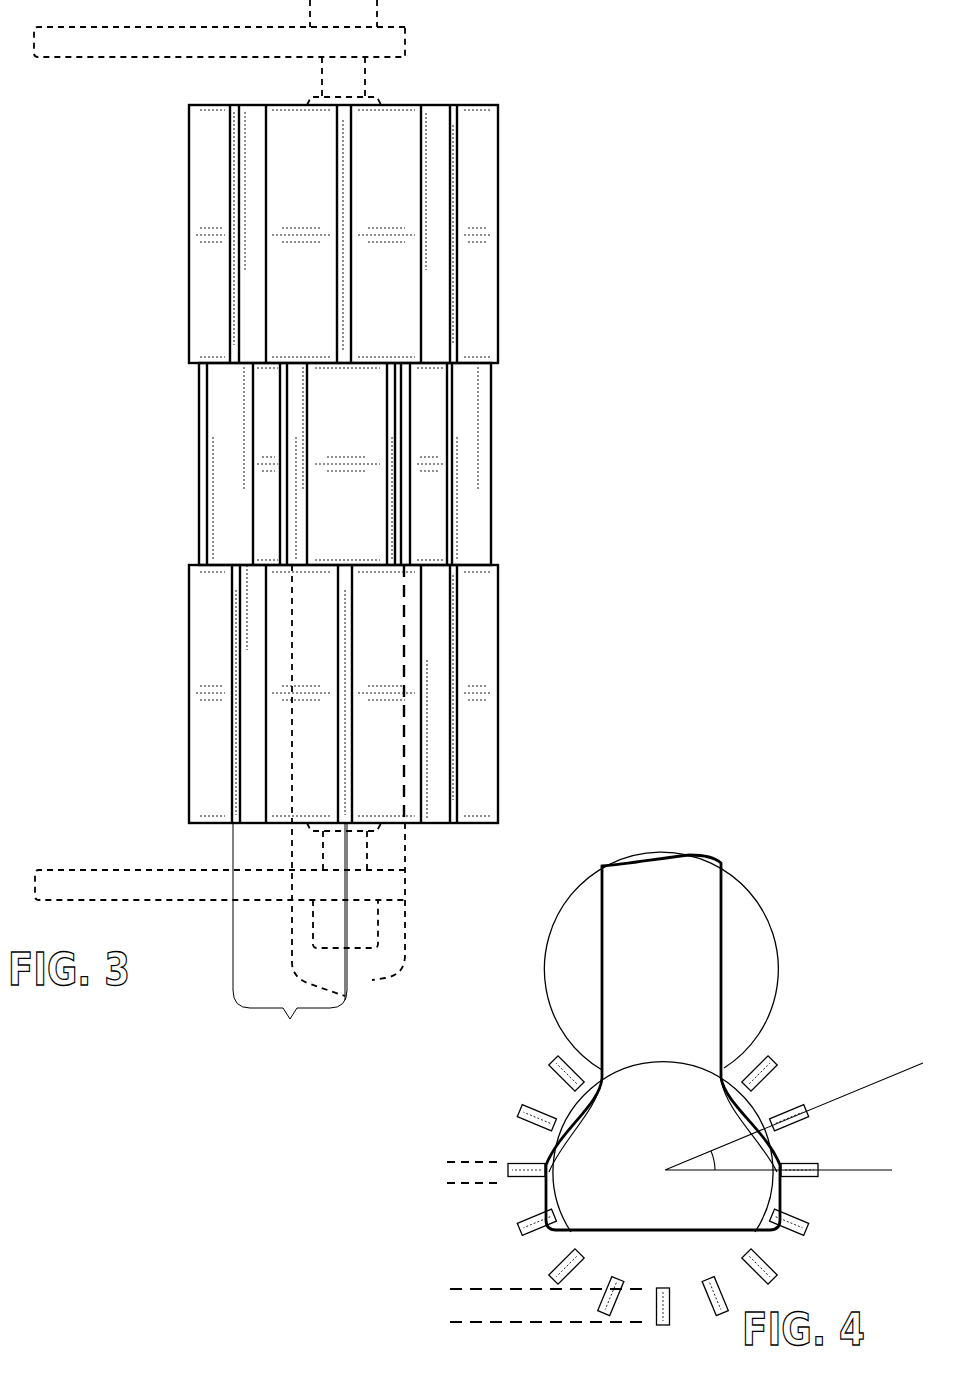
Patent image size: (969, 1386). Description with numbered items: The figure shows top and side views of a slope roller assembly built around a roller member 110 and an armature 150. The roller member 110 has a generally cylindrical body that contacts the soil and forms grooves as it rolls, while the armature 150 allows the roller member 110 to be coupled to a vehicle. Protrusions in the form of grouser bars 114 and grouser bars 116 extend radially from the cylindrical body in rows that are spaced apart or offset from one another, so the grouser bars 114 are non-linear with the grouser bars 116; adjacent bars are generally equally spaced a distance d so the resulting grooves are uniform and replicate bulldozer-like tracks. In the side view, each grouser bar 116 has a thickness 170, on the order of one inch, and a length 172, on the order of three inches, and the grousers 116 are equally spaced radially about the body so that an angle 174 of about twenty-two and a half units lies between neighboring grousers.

In FIG. 3, the roller member 110 is at (618, 381).
In FIG. 3, the grouser bars 114 is at (435, 258).
In FIG. 3, the grouser bars 116 is at (458, 512).
In FIG. 4, the grouser bars 116 is at (525, 1118).
In FIG. 4, the armature 150 is at (678, 990).
In FIG. 4, the thickness 170 is at (436, 1162).
In FIG. 4, the length 172 is at (447, 1298).
In FIG. 4, the angle 174 is at (822, 1139).